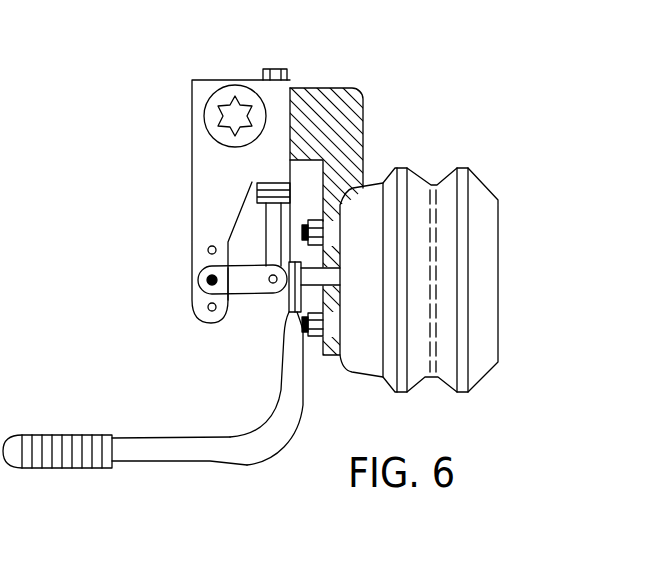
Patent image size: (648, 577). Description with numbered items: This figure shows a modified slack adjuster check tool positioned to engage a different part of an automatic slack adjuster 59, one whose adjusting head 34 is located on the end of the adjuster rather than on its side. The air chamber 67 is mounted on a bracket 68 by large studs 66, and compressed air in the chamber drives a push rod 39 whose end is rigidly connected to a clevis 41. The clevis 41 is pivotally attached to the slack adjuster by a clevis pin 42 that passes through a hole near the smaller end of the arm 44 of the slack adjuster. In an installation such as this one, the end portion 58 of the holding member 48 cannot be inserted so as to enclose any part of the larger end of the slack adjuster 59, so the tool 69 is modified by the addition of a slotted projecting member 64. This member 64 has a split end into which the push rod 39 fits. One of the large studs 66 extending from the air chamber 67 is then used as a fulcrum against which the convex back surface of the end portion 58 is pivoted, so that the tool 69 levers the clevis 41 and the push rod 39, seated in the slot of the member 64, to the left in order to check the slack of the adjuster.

The adjusting head 34 is at (273, 68).
The bracket 68 is at (353, 88).
The air chamber 67 is at (479, 187).
The automatic slack adjuster 59 is at (192, 153).
The arm 44 is at (192, 212).
The clevis pin 42 is at (207, 280).
The clevis 41 is at (222, 288).
The slotted projecting member 64 is at (290, 306).
The push rod 39 is at (317, 279).
The large studs 66 is at (306, 338).
The end portion 58 is at (302, 399).
The holding member 48 is at (145, 462).
The tool 69 is at (213, 465).